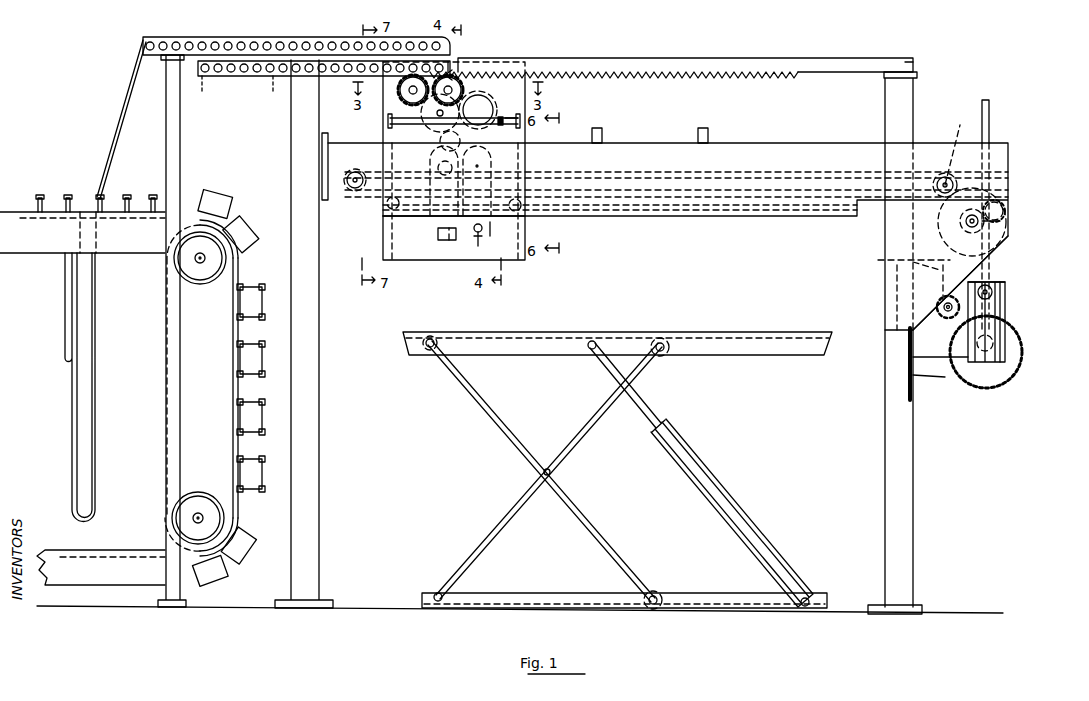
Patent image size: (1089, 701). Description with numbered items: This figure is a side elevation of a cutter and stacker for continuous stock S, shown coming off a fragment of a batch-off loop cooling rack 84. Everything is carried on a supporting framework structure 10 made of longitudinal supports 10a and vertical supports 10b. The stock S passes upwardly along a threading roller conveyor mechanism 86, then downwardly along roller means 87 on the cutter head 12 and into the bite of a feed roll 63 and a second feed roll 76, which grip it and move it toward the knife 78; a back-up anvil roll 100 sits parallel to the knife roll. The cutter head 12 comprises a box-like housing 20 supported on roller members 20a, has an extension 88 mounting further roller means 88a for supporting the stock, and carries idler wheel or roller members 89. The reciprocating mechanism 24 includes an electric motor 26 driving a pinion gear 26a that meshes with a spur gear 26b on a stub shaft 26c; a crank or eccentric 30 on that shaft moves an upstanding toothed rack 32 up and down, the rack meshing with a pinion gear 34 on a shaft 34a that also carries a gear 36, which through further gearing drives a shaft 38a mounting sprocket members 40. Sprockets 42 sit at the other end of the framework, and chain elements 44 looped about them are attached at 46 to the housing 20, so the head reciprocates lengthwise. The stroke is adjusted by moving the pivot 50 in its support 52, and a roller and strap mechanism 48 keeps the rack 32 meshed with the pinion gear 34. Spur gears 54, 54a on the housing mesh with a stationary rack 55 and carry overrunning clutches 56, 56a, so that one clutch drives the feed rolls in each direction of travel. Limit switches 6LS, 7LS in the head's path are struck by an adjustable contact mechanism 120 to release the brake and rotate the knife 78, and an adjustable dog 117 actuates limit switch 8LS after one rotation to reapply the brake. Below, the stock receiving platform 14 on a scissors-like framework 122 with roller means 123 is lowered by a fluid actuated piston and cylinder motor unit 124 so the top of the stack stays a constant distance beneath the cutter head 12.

The supporting framework structure 10 is at (927, 62).
The longitudinal supports 10a is at (835, 70).
The vertical supports 10b is at (315, 448).
The cutter head 12 is at (512, 262).
The stock receiving platform 14 is at (770, 331).
The box-like housing 20 is at (411, 262).
The roller members 20a is at (390, 224).
The reciprocating mechanism 24 is at (1010, 280).
The electric motor 26 is at (913, 260).
The pinion gear 26a is at (967, 323).
The spur gear 26b is at (1022, 360).
The stub shaft 26c is at (993, 344).
The crank or eccentric 30 is at (1005, 284).
The toothed rack 32 is at (990, 113).
The pinion gear 34 is at (992, 205).
The shaft 34a is at (1002, 218).
The gear 36 is at (948, 238).
The shaft 38a is at (947, 180).
The sprocket members 40 is at (945, 163).
The rotatable sprockets 42 is at (353, 192).
The chain elements 44 is at (653, 173).
The chain attachment 46 is at (385, 192).
The roller and strap mechanism 48 is at (1010, 207).
The pivot 50 is at (993, 292).
The support 52 is at (1003, 310).
The spur gear 54 is at (405, 93).
The spur gear 54a is at (456, 82).
The stationary rack 55 is at (645, 66).
The overrunning clutch 56 is at (390, 125).
The overrunning clutch 56a is at (448, 78).
The feed roll 63 is at (418, 122).
The second feed roll 76 is at (481, 130).
The knife 78 is at (501, 231).
The loop cooling rack 84 is at (132, 254).
The threading roller conveyor mechanism 86 is at (205, 38).
The roller means 87 is at (450, 58).
The extension 88 is at (243, 78).
The further roller means 88a is at (239, 91).
The idler wheel or roller members 89 is at (442, 143).
The back-up anvil roll 100 is at (449, 242).
The adjustable dog 117 is at (483, 240).
The adjustable contact mechanism 120 is at (513, 112).
The scissors-like framework 122 is at (508, 520).
The roller means 123 is at (665, 353).
The fluid actuated piston and cylinder motor unit 124 is at (750, 533).
The limit switch 6LS is at (598, 127).
The limit switch 7LS is at (712, 124).
The limit switch 8LS is at (437, 234).
The stock S is at (117, 128).